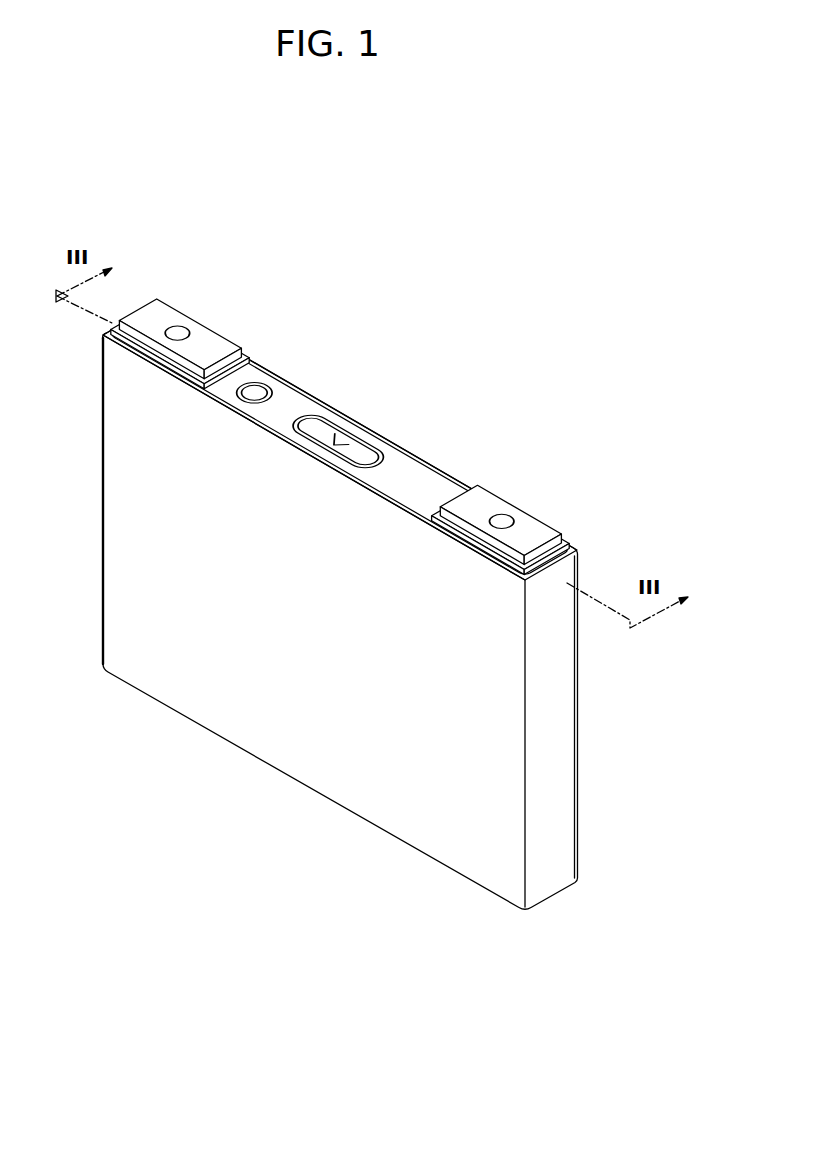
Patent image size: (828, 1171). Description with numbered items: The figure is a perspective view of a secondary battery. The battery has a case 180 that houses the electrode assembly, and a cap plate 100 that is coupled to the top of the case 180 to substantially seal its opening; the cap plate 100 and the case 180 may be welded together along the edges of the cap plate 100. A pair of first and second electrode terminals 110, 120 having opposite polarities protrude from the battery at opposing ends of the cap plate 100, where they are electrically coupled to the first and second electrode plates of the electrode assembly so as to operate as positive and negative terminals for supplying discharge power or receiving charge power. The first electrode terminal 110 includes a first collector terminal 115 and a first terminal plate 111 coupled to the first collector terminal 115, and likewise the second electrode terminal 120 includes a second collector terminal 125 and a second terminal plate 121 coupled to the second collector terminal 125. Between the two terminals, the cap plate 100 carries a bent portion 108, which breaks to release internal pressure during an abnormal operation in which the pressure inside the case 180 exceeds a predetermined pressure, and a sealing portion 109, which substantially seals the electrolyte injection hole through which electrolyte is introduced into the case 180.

The cap plate 100 is at (415, 470).
The bent portion 108 is at (343, 446).
The sealing portion 109 is at (253, 386).
The first electrode terminal 110 is at (523, 485).
The first terminal plate 111 is at (483, 500).
The first collector terminal 115 is at (508, 522).
The second electrode terminal 120 is at (195, 290).
The second terminal plate 121 is at (223, 345).
The second collector terminal 125 is at (176, 326).
The case 180 is at (558, 753).